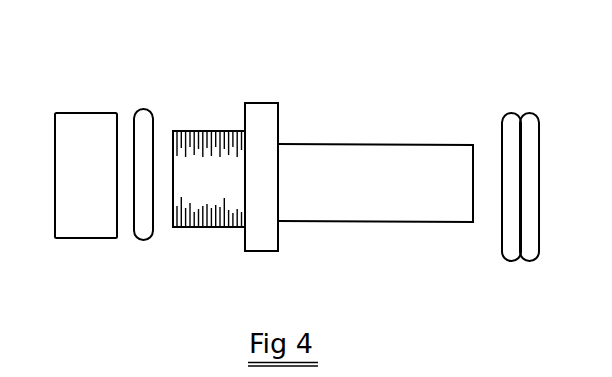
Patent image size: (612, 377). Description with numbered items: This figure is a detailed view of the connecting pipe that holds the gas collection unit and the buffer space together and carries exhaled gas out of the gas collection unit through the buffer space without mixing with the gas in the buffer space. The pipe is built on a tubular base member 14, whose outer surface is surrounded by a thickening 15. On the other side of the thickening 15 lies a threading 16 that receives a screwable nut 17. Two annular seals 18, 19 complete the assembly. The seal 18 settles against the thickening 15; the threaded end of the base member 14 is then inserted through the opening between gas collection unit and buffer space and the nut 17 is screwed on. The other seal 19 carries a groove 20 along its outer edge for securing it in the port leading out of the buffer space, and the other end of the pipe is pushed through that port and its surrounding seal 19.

The tubular base member 14 is at (360, 152).
The thickening 15 is at (258, 112).
The threading 16 is at (196, 130).
The screwable nut 17 is at (83, 128).
The annular seal 18 is at (142, 120).
The annular seal 19 is at (510, 117).
The groove 20 is at (523, 117).